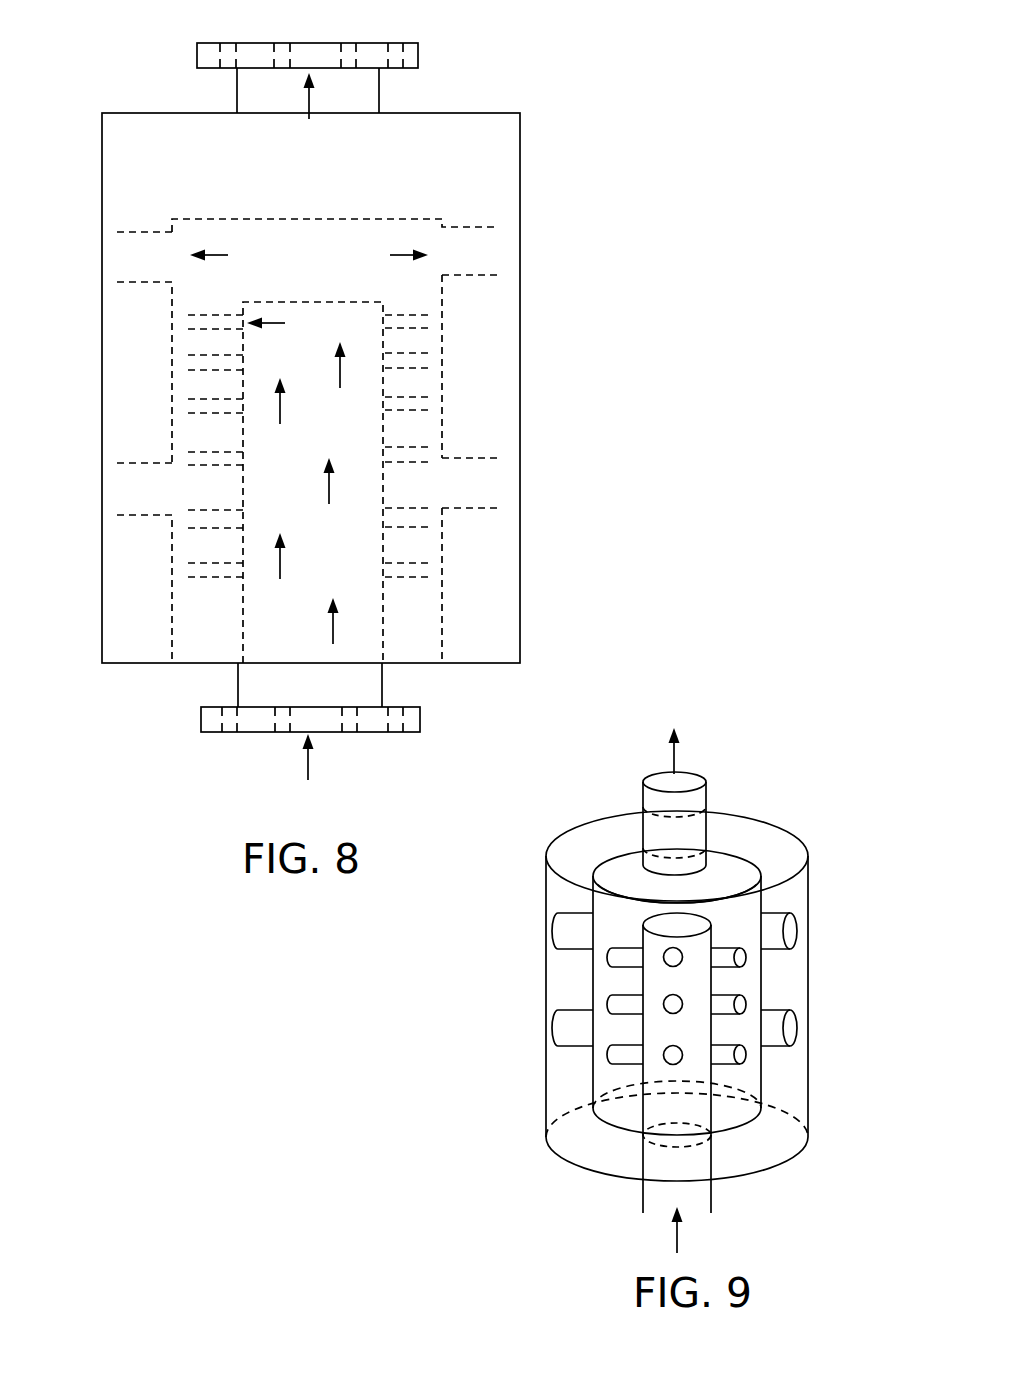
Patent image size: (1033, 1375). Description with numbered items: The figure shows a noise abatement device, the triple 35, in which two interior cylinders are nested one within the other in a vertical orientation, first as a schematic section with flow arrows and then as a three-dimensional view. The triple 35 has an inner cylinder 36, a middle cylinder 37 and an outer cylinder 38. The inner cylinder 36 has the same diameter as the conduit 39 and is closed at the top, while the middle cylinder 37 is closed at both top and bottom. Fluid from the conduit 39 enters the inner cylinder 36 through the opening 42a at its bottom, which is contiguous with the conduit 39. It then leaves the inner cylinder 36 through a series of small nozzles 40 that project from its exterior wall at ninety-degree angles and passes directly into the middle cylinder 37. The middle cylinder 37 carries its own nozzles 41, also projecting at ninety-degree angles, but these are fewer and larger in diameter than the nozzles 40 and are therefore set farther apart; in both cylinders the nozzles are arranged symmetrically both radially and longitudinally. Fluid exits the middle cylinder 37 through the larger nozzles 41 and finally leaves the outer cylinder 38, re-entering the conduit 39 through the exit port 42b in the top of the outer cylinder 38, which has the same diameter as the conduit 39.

In FIG. 8, the triple 35 is at (550, 165).
In FIG. 9, the triple 35 is at (826, 890).
In FIG. 8, the inner cylinder 36 is at (304, 508).
In FIG. 9, the inner cylinder 36 is at (687, 1039).
In FIG. 8, the middle cylinder 37 is at (329, 277).
In FIG. 9, the middle cylinder 37 is at (633, 936).
In FIG. 8, the outer cylinder 38 is at (520, 373).
In FIG. 9, the outer cylinder 38 is at (808, 987).
In FIG. 9, the conduit 39 is at (705, 785).
In FIG. 8, the small nozzles 40 is at (431, 570).
In FIG. 9, the small nozzles 40 is at (742, 1052).
In FIG. 8, the nozzles 41 is at (137, 490).
In FIG. 9, the nozzles 41 is at (563, 1028).
In FIG. 9, the opening 42a is at (662, 1153).
In FIG. 9, the exit port 42b is at (658, 858).